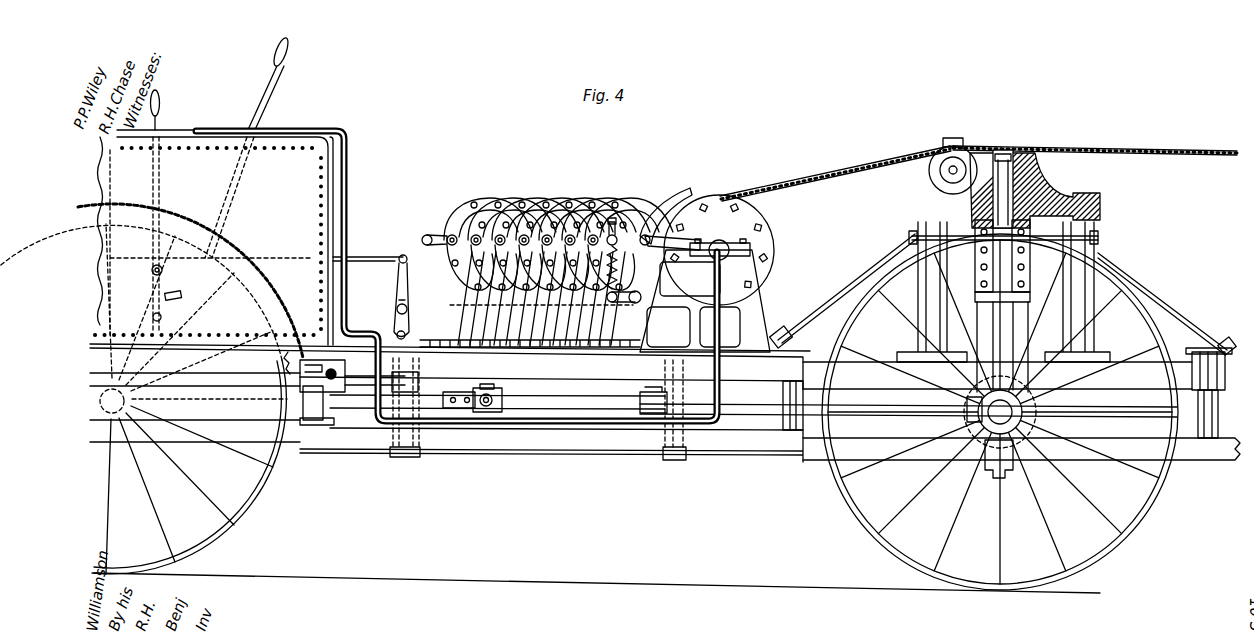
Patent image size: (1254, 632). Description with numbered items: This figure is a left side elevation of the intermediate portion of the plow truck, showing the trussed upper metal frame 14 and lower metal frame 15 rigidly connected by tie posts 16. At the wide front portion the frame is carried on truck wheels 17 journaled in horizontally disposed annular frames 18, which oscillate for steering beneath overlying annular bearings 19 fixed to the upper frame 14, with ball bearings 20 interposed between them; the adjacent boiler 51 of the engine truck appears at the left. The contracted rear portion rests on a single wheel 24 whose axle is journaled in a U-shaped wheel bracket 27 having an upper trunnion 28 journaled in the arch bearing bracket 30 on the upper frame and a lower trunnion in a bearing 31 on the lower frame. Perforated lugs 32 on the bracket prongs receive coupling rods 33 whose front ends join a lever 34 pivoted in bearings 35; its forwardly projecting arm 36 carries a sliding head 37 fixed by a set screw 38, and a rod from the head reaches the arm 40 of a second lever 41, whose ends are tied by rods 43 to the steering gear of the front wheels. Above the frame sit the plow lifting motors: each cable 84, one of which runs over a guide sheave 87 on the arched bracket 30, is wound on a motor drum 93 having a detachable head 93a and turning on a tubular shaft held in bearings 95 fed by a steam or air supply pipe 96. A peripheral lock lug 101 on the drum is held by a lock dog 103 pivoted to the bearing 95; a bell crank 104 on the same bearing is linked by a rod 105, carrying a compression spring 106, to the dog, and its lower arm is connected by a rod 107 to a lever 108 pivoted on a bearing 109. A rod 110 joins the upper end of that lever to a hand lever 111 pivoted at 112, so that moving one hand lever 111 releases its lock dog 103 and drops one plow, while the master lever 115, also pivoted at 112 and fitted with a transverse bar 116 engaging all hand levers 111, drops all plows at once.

The upper metal frame 14 is at (1113, 382).
The lower metal frame 15 is at (1148, 453).
The tie posts 16 is at (317, 425).
The truck wheels 17 is at (220, 537).
The annular frames 18 is at (310, 384).
The annular bearings 19 is at (320, 362).
The ball bearings 20 is at (331, 380).
The single wheel 24 is at (890, 550).
The wheel bracket 27 is at (1003, 277).
The upper trunnion 28 is at (1035, 162).
The arch bearing bracket 30 is at (1097, 198).
The bearing 31 is at (1008, 477).
The perforated lugs 32 is at (973, 427).
The coupling rods 33 is at (883, 400).
The lever 34 is at (642, 414).
The bearings 35 is at (675, 461).
The forwardly projecting arm 36 is at (565, 404).
The sliding head 37 is at (498, 413).
The set screw 38 is at (485, 384).
The arm 40 is at (440, 410).
The lever 41 is at (420, 376).
The rods 43 is at (367, 433).
The boiler 51 is at (205, 244).
The cable 84 is at (853, 168).
The guide sheave 87 is at (933, 148).
The motor drum 93 is at (540, 200).
The detachable side or head 93a is at (487, 203).
The bearings 95 is at (465, 300).
The steam or air supply pipe 96 is at (347, 182).
The lock lug 101 is at (680, 213).
The lock dog 103 is at (667, 212).
The bell crank 104 is at (637, 320).
The rod 105 is at (612, 222).
The compression spring 106 is at (583, 233).
The rod 107 is at (523, 348).
The lever 108 is at (401, 293).
The bearing 109 is at (397, 325).
The rod 110 is at (358, 256).
The hand lever 111 is at (163, 110).
The pivot 112 is at (168, 318).
The master lever 115 is at (262, 104).
The transverse bar 116 is at (164, 293).